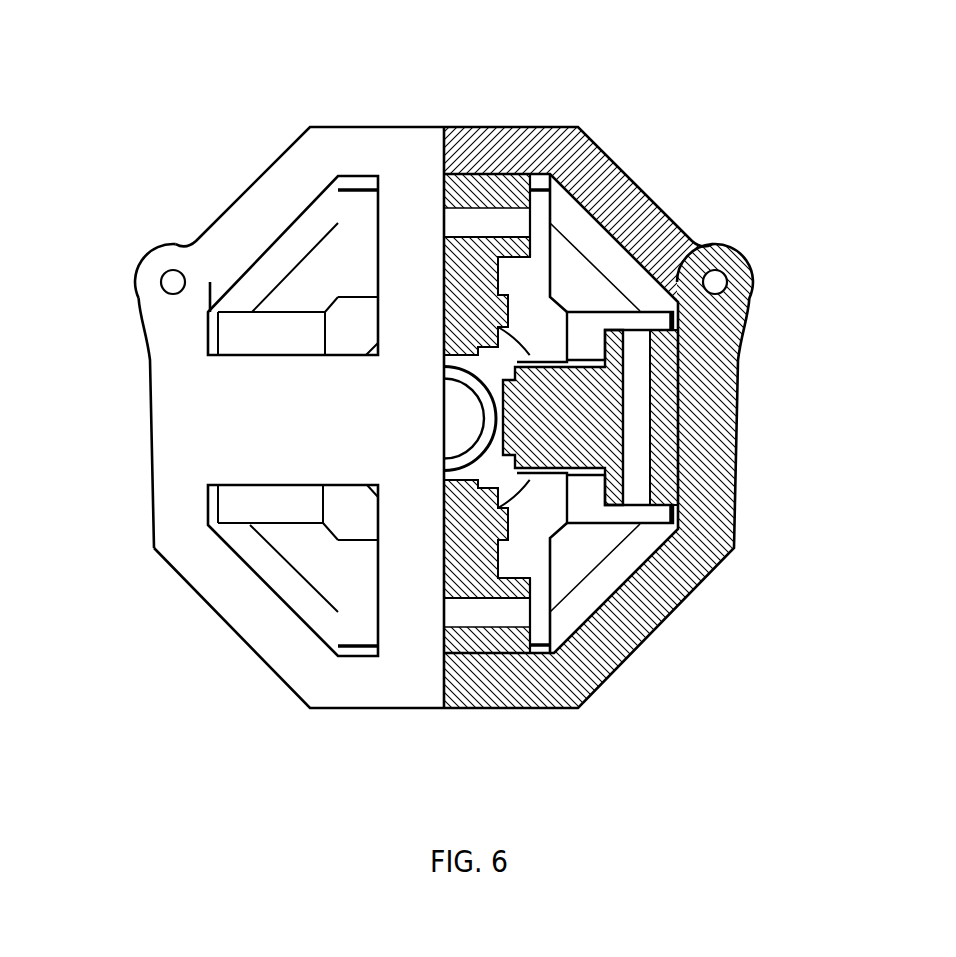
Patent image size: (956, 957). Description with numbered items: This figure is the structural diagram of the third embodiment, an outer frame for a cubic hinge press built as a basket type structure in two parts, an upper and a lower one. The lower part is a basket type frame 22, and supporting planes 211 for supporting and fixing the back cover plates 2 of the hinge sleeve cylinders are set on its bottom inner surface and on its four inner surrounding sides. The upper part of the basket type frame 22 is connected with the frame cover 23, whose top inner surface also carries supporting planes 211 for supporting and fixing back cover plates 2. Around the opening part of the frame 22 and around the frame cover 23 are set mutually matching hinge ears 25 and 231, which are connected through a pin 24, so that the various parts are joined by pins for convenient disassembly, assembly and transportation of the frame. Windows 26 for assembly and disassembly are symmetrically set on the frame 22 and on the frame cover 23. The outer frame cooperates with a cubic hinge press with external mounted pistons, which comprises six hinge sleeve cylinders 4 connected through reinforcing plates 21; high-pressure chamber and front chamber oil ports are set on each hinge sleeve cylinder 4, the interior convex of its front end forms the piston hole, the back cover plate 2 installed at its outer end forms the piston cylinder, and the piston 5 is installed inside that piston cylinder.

The back cover plate 2 is at (675, 369).
The hinge sleeve cylinder 4 is at (584, 320).
The piston 5 is at (605, 377).
The reinforcing plate 21 is at (308, 287).
The basket type frame 22 is at (240, 390).
The frame cover 23 is at (383, 150).
The pin 24 is at (162, 281).
The hinge ear 25 is at (153, 310).
The window 26 is at (318, 217).
The supporting plane 211 is at (493, 178).
The hinge ear 231 is at (202, 245).